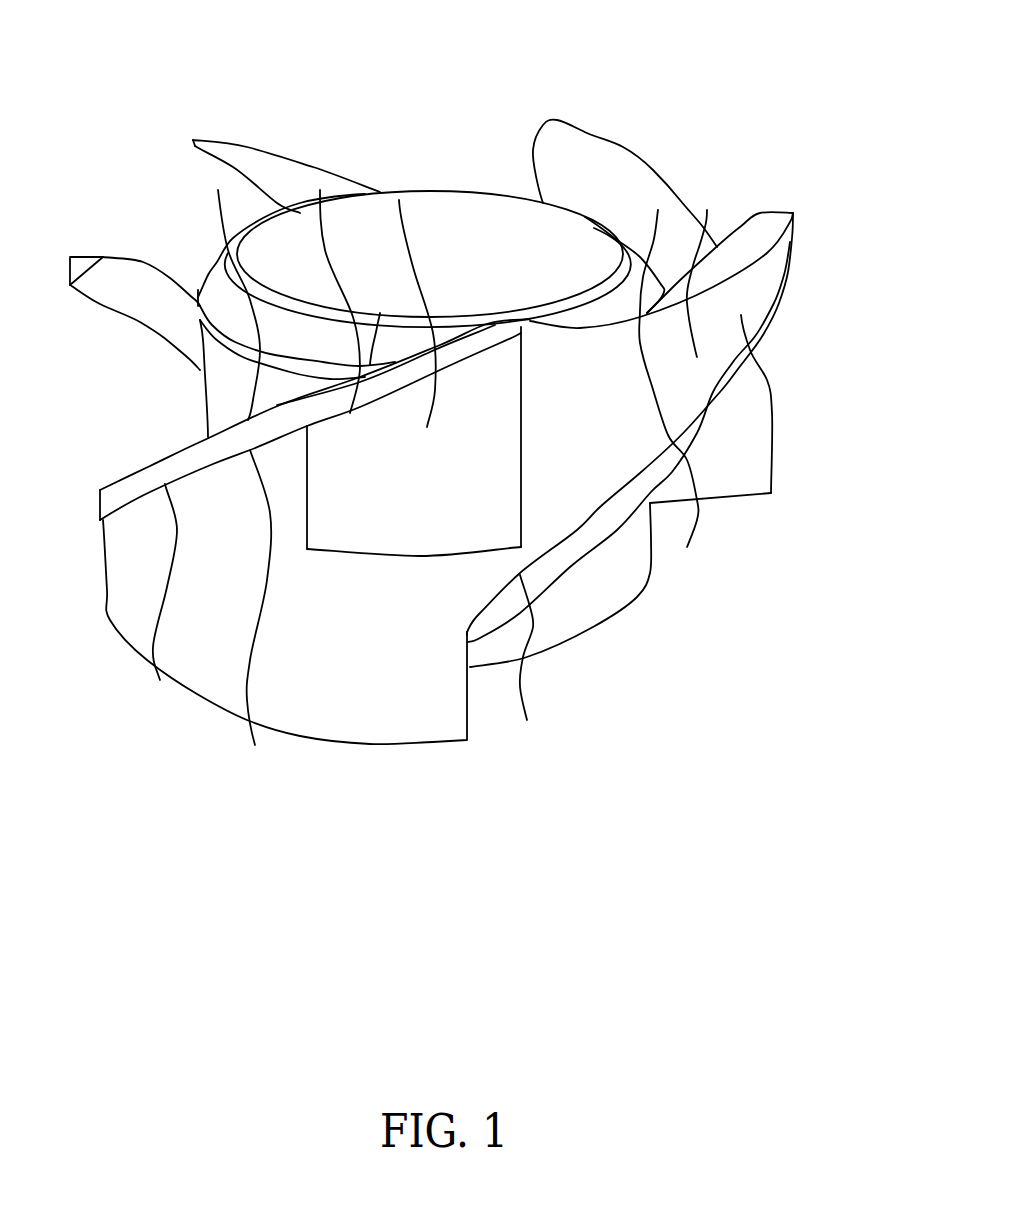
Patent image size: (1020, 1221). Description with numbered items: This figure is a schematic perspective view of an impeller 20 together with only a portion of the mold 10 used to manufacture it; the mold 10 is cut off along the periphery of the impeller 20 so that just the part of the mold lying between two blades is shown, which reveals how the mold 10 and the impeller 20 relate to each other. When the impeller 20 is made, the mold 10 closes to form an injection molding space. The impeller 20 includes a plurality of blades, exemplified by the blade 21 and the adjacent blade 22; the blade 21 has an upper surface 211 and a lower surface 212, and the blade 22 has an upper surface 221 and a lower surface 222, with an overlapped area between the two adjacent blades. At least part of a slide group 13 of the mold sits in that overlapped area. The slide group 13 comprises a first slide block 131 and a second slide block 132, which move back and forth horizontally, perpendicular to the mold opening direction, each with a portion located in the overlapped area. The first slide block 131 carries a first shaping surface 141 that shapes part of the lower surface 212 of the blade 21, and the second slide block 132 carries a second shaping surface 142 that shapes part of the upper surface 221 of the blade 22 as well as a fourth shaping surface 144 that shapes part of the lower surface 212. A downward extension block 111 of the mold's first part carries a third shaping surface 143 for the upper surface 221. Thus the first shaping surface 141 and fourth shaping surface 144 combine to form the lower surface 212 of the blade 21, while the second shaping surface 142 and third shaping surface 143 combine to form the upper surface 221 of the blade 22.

The mold 10 is at (821, 211).
The impeller 20 is at (487, 156).
The slide group 13 is at (487, 797).
The first slide block 131 is at (399, 200).
The second slide block 132 is at (437, 713).
The downward extension block 111 is at (707, 210).
The first shaping surface 141 is at (320, 190).
The second shaping surface 142 is at (527, 720).
The third shaping surface 143 is at (741, 315).
The fourth shaping surface 144 is at (255, 745).
The blade 21 is at (128, 483).
The upper surface 211 is at (218, 190).
The lower surface 212 is at (160, 680).
The blade 22 is at (743, 373).
The upper surface 221 is at (658, 210).
The lower surface 222 is at (687, 547).